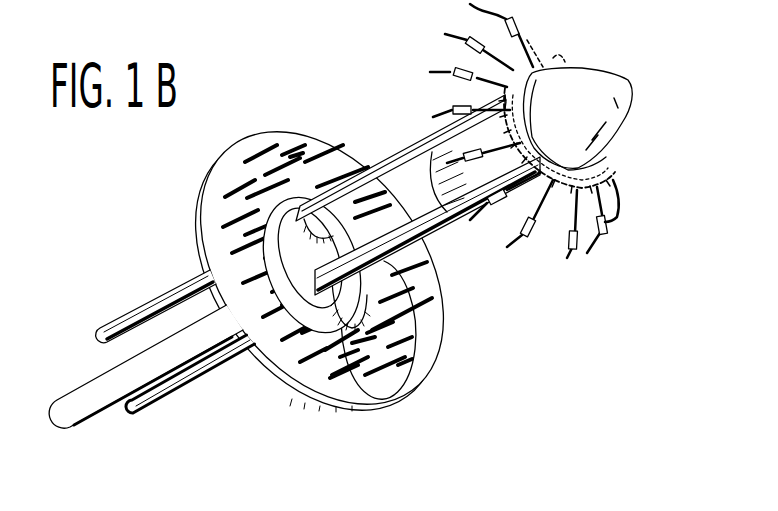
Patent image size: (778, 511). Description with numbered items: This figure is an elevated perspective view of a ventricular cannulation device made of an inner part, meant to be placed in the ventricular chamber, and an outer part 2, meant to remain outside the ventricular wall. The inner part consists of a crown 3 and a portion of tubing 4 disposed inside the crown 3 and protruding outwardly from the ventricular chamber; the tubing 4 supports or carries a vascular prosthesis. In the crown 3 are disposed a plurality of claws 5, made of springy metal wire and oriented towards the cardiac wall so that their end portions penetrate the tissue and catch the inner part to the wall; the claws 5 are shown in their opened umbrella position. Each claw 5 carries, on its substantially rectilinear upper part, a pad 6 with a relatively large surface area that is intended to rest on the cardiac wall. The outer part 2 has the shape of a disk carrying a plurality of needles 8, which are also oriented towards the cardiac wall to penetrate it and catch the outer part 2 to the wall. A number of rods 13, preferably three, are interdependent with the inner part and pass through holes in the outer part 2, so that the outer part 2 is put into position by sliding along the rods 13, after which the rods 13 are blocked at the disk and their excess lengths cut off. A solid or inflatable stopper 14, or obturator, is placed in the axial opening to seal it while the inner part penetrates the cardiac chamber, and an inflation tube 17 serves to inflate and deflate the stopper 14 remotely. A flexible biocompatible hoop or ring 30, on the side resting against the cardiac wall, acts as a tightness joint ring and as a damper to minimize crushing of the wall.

The outer part 2 is at (298, 383).
The crown 3 is at (497, 101).
The tubing 4 is at (443, 210).
The claws 5 is at (445, 33).
The pad 6 is at (607, 229).
The needles 8 is at (312, 134).
The rods 13 is at (170, 282).
The stopper 14 is at (588, 80).
The inflation tube 17 is at (97, 407).
The hoop or ring 30 is at (385, 397).